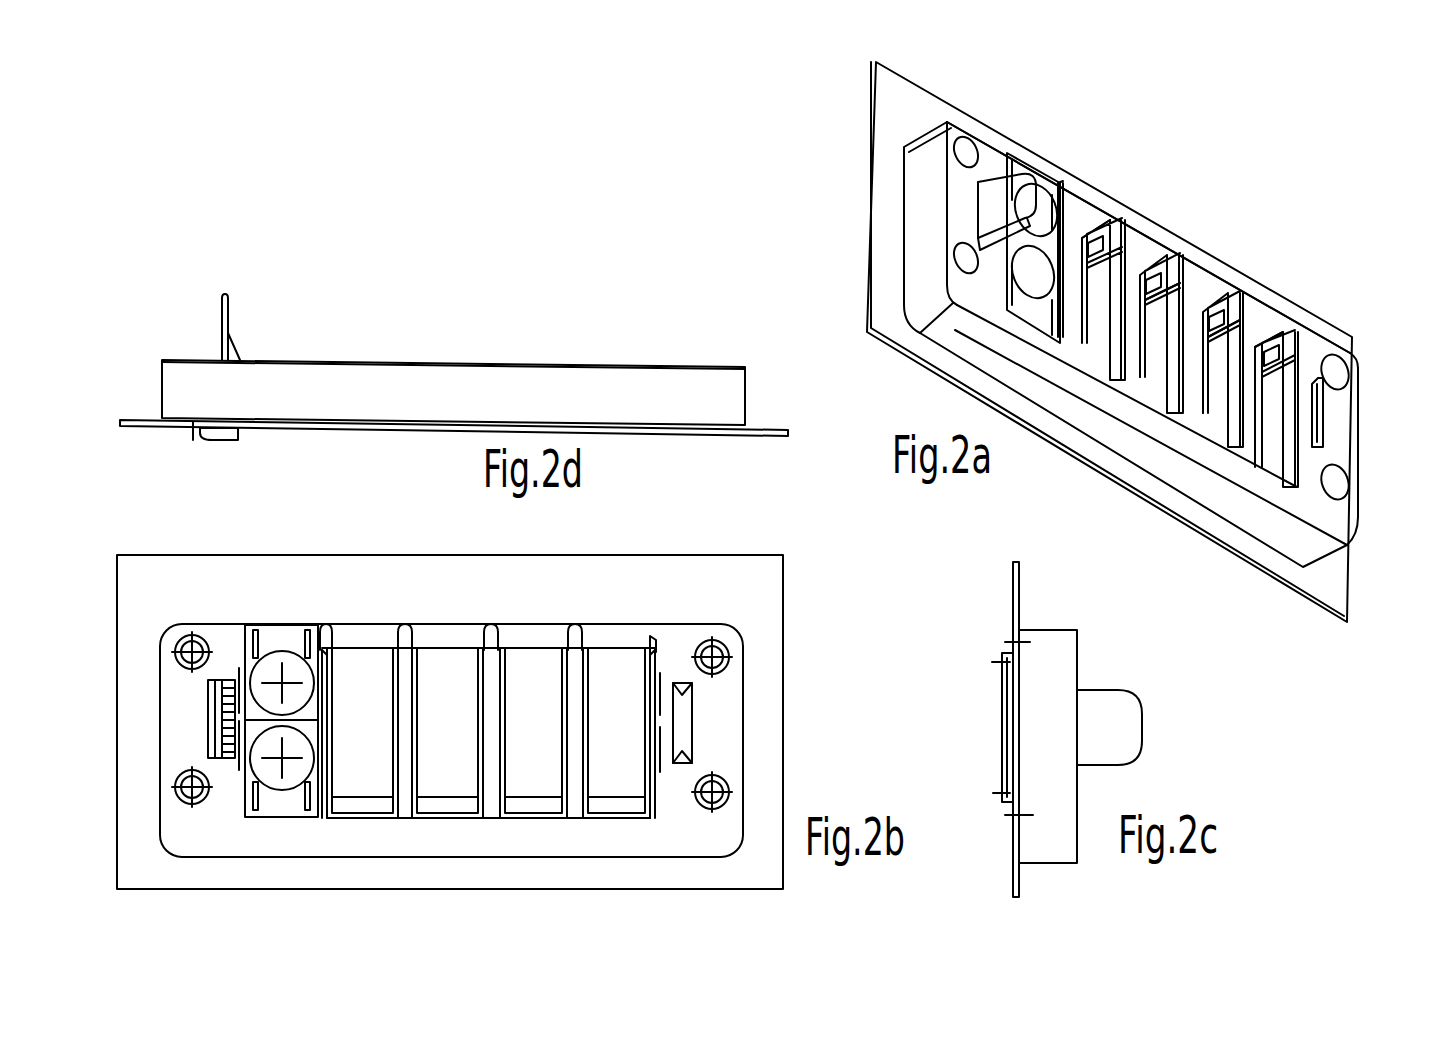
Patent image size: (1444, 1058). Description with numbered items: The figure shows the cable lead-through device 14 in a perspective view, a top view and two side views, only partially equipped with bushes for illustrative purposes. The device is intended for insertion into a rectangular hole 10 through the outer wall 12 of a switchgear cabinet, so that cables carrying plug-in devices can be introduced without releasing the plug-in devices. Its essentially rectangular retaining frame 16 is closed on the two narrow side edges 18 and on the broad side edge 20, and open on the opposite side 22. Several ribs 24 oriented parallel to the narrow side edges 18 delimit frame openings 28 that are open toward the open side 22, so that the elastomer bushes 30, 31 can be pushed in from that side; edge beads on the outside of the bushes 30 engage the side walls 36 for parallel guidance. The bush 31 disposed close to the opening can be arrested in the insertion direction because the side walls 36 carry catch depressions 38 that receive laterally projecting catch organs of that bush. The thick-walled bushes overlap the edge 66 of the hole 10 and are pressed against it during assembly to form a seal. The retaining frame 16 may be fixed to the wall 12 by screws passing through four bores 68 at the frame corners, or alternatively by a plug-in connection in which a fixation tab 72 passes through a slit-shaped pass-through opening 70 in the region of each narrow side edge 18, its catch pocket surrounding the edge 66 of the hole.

In FIG. 2B, the hole through the wall 10 is at (450, 657).
In FIG. 2A, the hole through the wall 10 is at (1220, 350).
In FIG. 2D, the outer wall 12 is at (764, 440).
In FIG. 2B, the outer wall 12 is at (560, 572).
In FIG. 2C, the outer wall 12 is at (1023, 602).
In FIG. 2A, the outer wall 12 is at (1150, 240).
In FIG. 2D, the cable lead-through device 14 is at (648, 388).
In FIG. 2B, the cable lead-through device 14 is at (722, 718).
In FIG. 2C, the cable lead-through device 14 is at (1066, 791).
In FIG. 2A, the cable lead-through device 14 is at (1094, 415).
In FIG. 2D, the retaining frame 16 is at (548, 392).
In FIG. 2B, the retaining frame 16 is at (492, 832).
In FIG. 2A, the retaining frame 16 is at (918, 233).
In FIG. 2B, the narrow side edges 18 is at (168, 708).
In FIG. 2A, the narrow side edges 18 is at (960, 197).
In FIG. 2B, the broad side edge 20 is at (435, 828).
In FIG. 2A, the broad side edge 20 is at (1210, 430).
In FIG. 2B, the open side 22 is at (545, 620).
In FIG. 2B, the ribs 24 is at (488, 712).
In FIG. 2A, the ribs 24 is at (1140, 252).
In FIG. 2A, the frame openings 28 is at (1077, 230).
In FIG. 2B, the bush 30 is at (267, 807).
In FIG. 2A, the bush 30 is at (1033, 313).
In FIG. 2B, the bush 31 is at (275, 640).
In FIG. 2A, the bush 31 is at (1042, 180).
In FIG. 2B, the side walls 36 is at (647, 750).
In FIG. 2A, the side walls 36 is at (1192, 322).
In FIG. 2B, the catch depressions 38 is at (650, 653).
In FIG. 2A, the catch depressions 38 is at (1173, 273).
In FIG. 2B, the edge of the hole through the wall 66 is at (518, 647).
In FIG. 2B, the bores 68 is at (190, 648).
In FIG. 2B, the pass-through opening 70 is at (678, 703).
In FIG. 2A, the pass-through opening 70 is at (1318, 395).
In FIG. 2D, the fixation tab 72 is at (223, 343).
In FIG. 2B, the fixation tab 72 is at (227, 683).
In FIG. 2C, the fixation tab 72 is at (1092, 717).
In FIG. 2A, the fixation tab 72 is at (1000, 197).